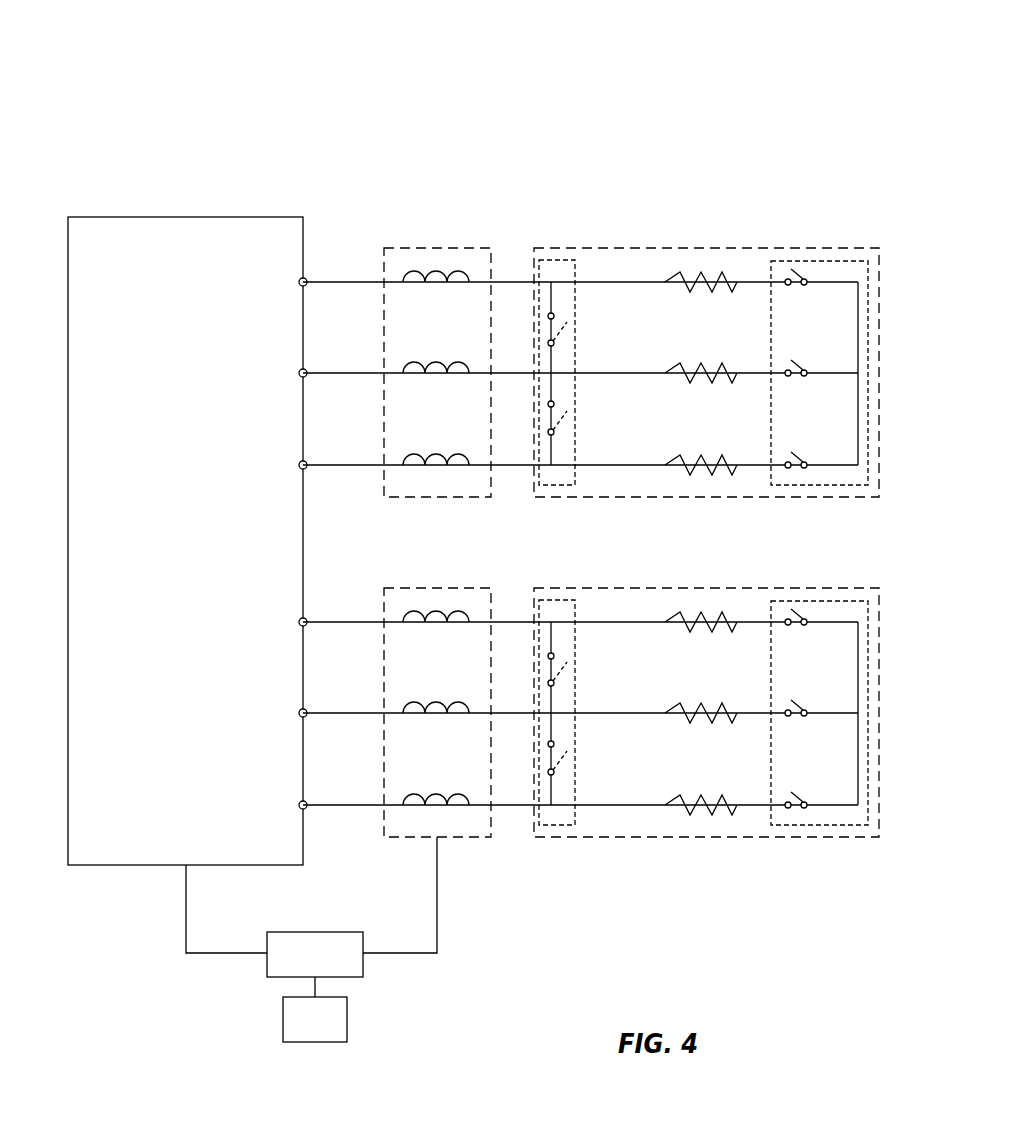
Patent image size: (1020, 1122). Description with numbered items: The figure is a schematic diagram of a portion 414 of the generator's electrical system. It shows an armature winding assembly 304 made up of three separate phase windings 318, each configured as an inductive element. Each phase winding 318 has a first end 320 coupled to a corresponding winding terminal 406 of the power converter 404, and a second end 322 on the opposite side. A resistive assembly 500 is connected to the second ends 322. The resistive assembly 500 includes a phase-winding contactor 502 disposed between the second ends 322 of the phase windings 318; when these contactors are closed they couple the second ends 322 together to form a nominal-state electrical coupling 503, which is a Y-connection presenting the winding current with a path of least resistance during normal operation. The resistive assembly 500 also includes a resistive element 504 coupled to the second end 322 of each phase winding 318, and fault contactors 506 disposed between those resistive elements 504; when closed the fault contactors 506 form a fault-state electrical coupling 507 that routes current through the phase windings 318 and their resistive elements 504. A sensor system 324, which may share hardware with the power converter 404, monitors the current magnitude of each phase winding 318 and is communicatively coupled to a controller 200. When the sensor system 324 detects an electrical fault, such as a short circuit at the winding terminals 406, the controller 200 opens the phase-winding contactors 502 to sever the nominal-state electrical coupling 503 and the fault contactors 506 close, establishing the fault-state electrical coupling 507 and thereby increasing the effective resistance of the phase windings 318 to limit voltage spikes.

The portion of the electrical system 414 is at (165, 92).
The power converter 404 is at (143, 225).
The winding terminal 406 is at (300, 283).
The first end 320 is at (372, 266).
The phase winding 318 is at (418, 289).
The armature winding assembly 304 is at (435, 246).
The second end 322 is at (497, 368).
The nominal-state electrical coupling 503 is at (566, 258).
The phase-winding contactor 502 is at (566, 337).
The resistive element 504 is at (712, 292).
The fault contactor 506 is at (795, 290).
The fault-state electrical coupling 507 is at (875, 296).
The resistive assembly 500 is at (838, 246).
The sensor system 324 is at (365, 965).
The controller 200 is at (347, 1022).